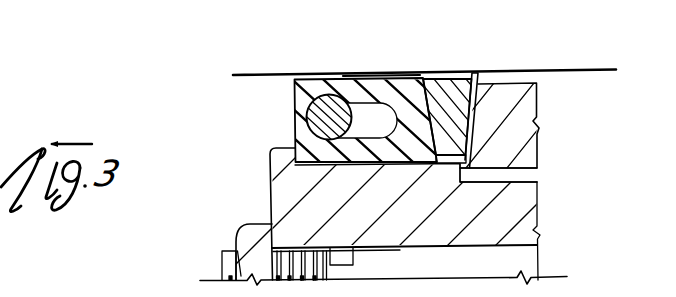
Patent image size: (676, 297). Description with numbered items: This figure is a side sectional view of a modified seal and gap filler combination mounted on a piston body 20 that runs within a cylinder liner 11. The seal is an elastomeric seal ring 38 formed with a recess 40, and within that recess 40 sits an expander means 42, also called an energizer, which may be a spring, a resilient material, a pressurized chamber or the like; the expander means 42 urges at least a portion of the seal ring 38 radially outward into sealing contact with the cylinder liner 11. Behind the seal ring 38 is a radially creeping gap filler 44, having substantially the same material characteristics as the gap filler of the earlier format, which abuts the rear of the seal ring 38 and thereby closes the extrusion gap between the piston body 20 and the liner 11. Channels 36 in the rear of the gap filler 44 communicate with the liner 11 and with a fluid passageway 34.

The cylinder liner 11 is at (597, 103).
The piston body 20 is at (556, 139).
The fluid passageway 34 is at (563, 200).
The channels 36 is at (490, 42).
The elastomeric seal ring 38 is at (320, 78).
The recess 40 is at (306, 107).
The expander means 42 is at (320, 117).
The gap filler 44 is at (450, 78).